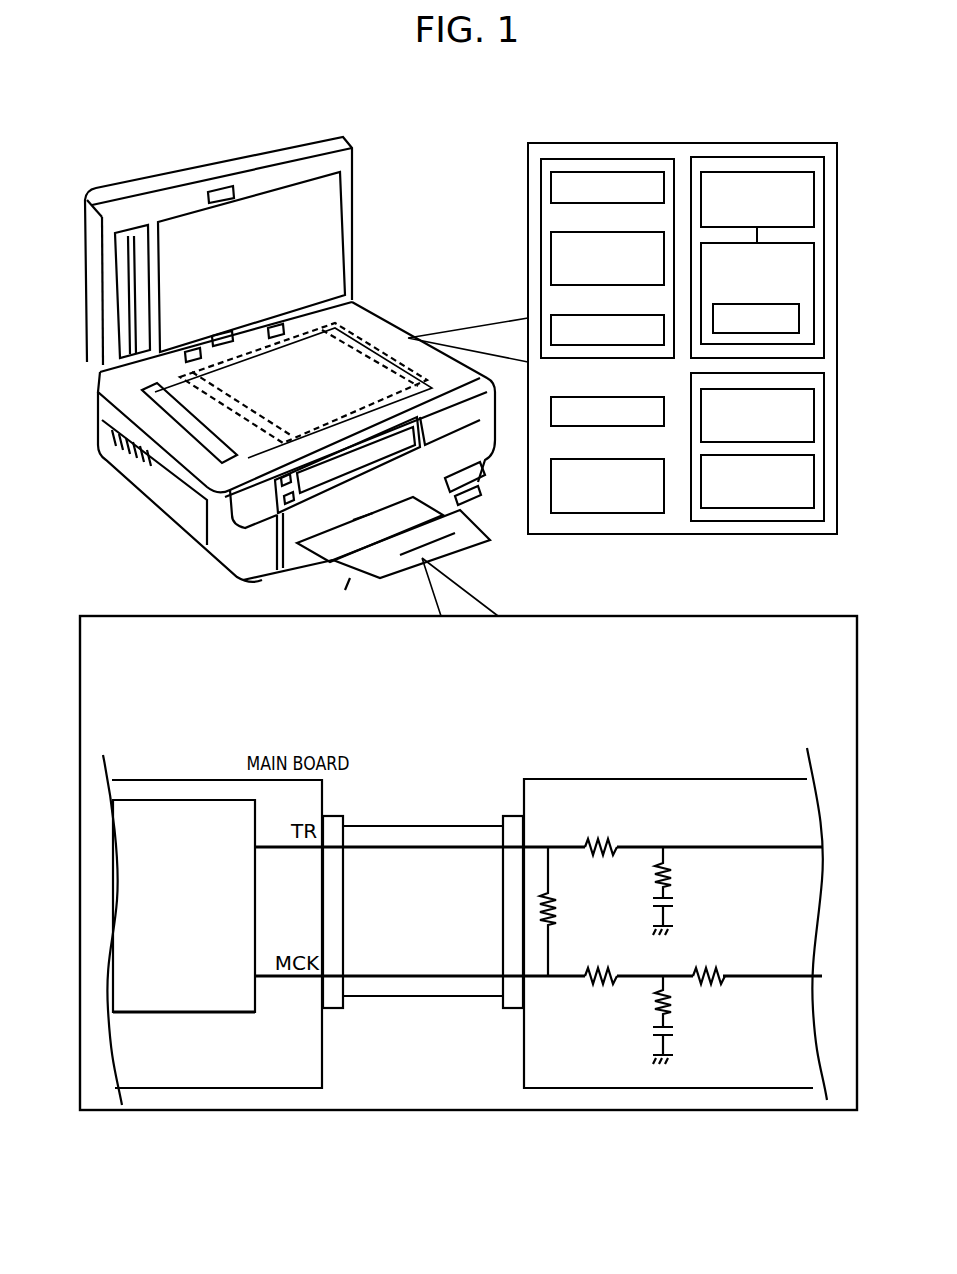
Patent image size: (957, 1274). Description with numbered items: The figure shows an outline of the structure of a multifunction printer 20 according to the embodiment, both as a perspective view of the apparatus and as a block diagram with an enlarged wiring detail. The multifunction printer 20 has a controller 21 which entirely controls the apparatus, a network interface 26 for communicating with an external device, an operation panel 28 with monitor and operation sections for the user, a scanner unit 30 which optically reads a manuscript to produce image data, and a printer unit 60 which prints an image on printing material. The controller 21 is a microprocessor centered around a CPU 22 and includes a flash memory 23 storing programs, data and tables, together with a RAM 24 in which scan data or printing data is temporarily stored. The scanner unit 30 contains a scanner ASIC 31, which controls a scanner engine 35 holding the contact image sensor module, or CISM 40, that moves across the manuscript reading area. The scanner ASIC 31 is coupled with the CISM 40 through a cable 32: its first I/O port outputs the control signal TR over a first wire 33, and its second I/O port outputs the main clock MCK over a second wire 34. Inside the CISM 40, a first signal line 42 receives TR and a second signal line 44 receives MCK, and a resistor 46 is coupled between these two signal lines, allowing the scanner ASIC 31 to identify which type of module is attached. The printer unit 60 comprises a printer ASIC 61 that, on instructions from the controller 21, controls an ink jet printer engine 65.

The multifunction printer 20 is at (404, 172).
The controller 21 is at (606, 159).
The CPU 22 is at (551, 185).
The flash memory 23 is at (551, 252).
The RAM 24 is at (551, 316).
The network interface (I/F) 26 is at (618, 397).
The operation panel 28 is at (618, 459).
The scanner unit 30 is at (369, 304).
The scanner ASIC 31 is at (814, 196).
The cable 32 is at (757, 236).
The first wire 33 is at (421, 847).
The second wire 34 is at (465, 976).
The scanner engine 35 is at (814, 262).
The contact image sensor module (CISM) 40 is at (799, 318).
The first signal line 42 is at (697, 846).
The second signal line 44 is at (740, 976).
The resistor 46 is at (537, 893).
The printer unit 60 is at (170, 537).
The printer ASIC 61 is at (814, 413).
The printer engine 65 is at (814, 478).